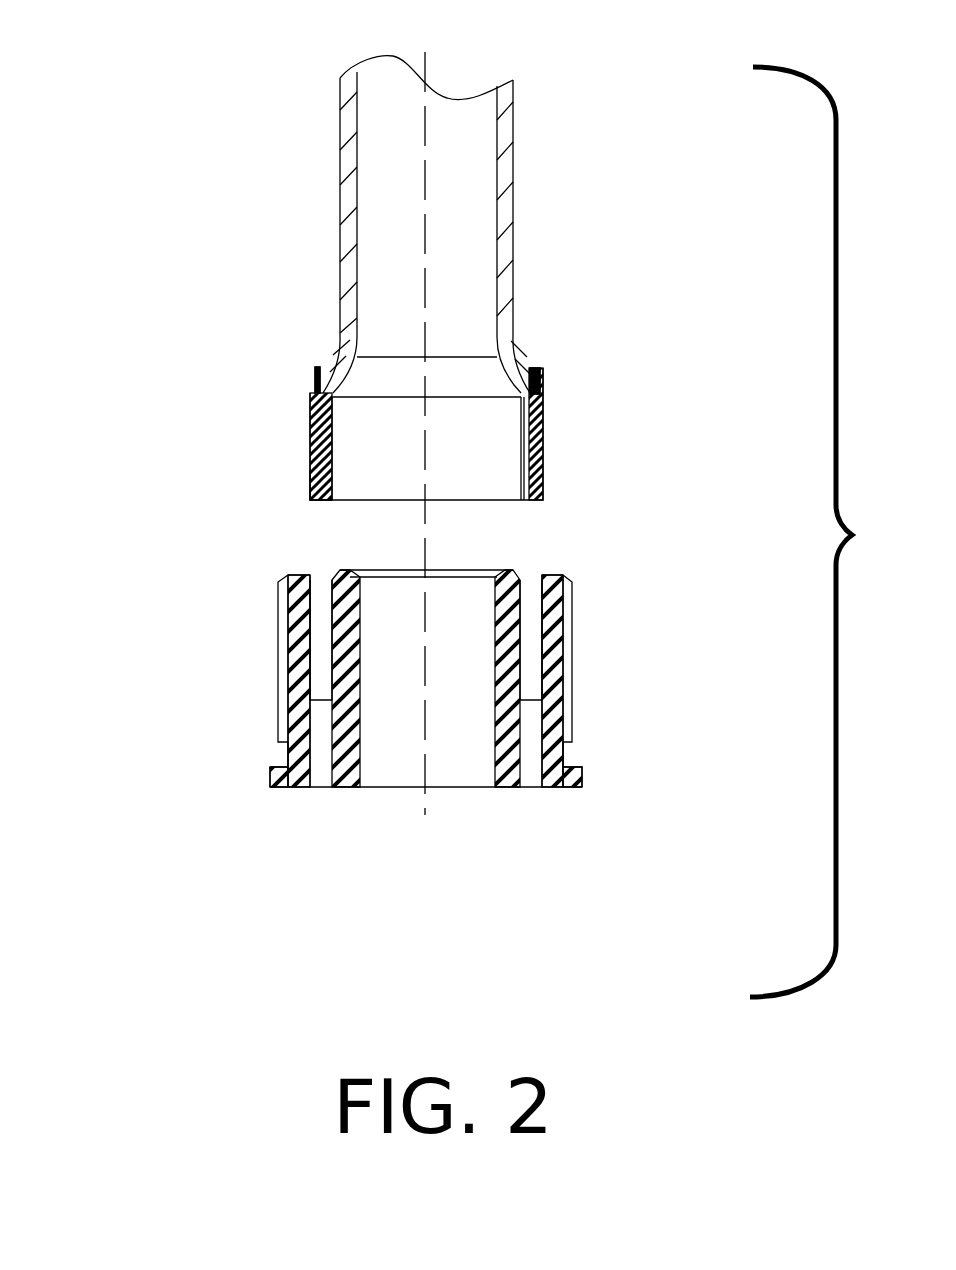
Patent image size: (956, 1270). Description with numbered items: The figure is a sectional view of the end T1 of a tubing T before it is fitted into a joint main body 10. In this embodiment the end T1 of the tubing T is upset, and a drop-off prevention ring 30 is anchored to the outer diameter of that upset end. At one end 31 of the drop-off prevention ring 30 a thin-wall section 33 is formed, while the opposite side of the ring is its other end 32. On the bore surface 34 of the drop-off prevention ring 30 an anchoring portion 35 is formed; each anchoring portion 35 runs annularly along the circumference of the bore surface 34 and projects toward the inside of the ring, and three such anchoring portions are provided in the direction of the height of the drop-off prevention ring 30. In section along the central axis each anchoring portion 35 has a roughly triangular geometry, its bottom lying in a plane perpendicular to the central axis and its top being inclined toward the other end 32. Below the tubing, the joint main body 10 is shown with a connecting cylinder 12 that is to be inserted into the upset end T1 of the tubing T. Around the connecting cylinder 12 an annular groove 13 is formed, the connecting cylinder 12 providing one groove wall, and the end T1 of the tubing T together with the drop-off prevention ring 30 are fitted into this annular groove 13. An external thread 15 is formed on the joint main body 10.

The tubing T is at (513, 160).
The end of the tubing T1 is at (522, 440).
The joint main body 10 is at (270, 790).
The connecting cylinder 12 is at (363, 632).
The annular groove 13 is at (328, 655).
The external thread 15 is at (275, 703).
The drop-off prevention ring 30 is at (305, 420).
The one end of the drop-off prevention ring 31 is at (312, 378).
The other end of the drop-off prevention ring 32 is at (307, 498).
The thin-wall section 33 is at (312, 378).
The bore surface 34 is at (336, 376).
The anchoring portion 35 is at (333, 447).